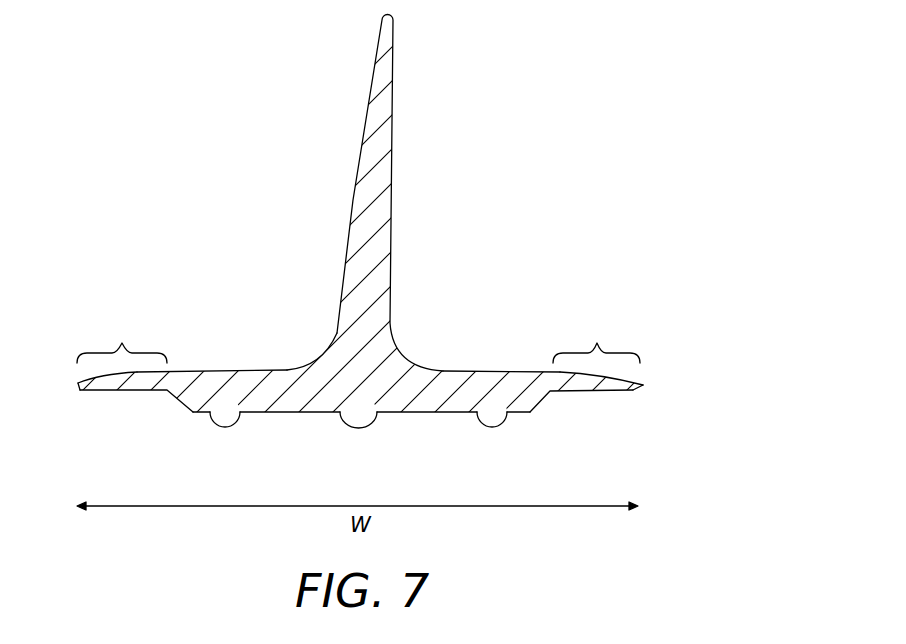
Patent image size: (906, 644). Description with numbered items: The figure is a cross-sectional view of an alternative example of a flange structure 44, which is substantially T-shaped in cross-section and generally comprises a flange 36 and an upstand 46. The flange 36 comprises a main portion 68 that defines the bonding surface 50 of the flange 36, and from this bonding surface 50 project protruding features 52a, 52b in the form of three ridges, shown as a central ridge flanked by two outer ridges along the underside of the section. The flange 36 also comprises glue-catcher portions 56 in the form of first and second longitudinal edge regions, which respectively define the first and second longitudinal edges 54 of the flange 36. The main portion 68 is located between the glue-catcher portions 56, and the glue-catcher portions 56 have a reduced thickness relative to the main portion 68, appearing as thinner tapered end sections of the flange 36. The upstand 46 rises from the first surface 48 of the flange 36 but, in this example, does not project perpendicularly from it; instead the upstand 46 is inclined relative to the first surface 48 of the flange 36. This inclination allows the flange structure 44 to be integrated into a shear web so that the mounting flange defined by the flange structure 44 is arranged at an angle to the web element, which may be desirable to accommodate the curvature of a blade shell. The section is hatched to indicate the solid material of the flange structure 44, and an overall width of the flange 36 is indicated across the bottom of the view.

The flange structure 44 is at (541, 59).
The upstand 46 is at (388, 178).
The first surface 48 is at (218, 368).
The main portion 68 is at (310, 380).
The flange 36 is at (525, 378).
The glue-catcher portions 56 is at (360, 365).
The longitudinal edges 54 is at (78, 383).
The bonding surface 50 is at (443, 414).
The protruding feature 52a is at (365, 428).
The protruding features 52b is at (225, 428).